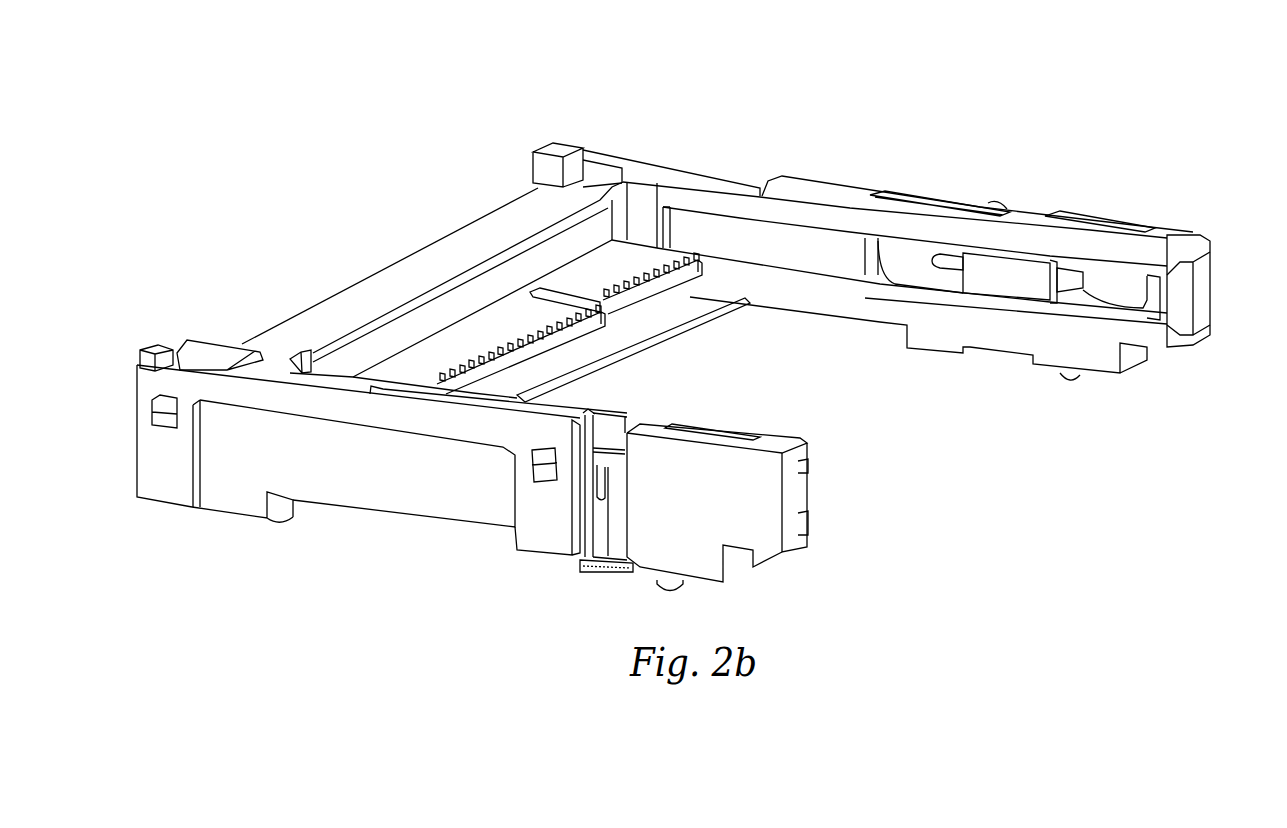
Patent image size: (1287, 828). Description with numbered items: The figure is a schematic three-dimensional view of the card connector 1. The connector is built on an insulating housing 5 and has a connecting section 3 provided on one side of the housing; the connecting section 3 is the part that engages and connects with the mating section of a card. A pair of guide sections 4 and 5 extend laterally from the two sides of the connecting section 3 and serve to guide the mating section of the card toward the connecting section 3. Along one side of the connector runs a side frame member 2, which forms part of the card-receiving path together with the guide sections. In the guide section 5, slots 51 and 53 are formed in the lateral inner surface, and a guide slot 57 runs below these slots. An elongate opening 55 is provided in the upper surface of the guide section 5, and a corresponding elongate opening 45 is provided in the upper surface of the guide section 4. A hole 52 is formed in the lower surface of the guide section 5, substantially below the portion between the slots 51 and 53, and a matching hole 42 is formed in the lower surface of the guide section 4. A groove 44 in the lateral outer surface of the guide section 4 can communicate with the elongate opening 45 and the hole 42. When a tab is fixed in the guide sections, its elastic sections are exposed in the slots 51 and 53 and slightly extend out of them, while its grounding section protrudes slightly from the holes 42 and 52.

The card connector 1 is at (1092, 130).
The side frame member 2 is at (367, 297).
The connecting section 3 is at (503, 317).
The guide section 4 is at (407, 482).
The guide section 5 is at (1200, 252).
The hole 42 is at (607, 578).
The groove 44 is at (603, 507).
The elongate opening 45 is at (707, 425).
The slot 51 is at (1103, 293).
The hole 52 is at (997, 362).
The slot 53 is at (903, 265).
The elongate opening 55 is at (930, 197).
The guide slot 57 is at (788, 247).